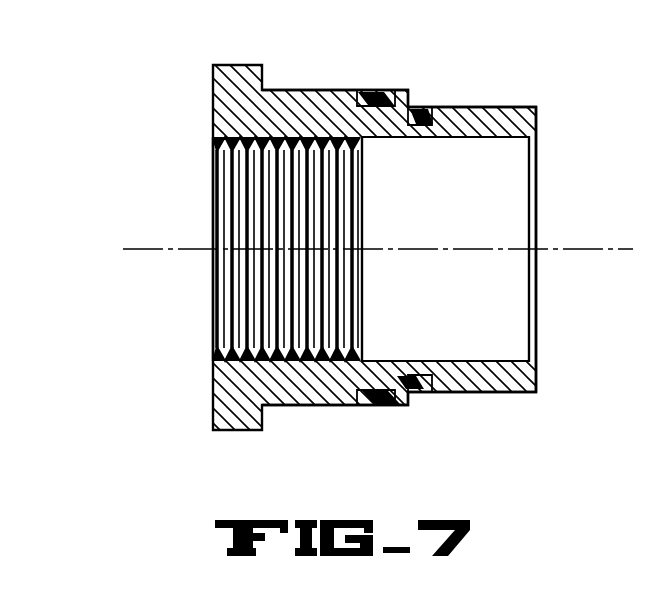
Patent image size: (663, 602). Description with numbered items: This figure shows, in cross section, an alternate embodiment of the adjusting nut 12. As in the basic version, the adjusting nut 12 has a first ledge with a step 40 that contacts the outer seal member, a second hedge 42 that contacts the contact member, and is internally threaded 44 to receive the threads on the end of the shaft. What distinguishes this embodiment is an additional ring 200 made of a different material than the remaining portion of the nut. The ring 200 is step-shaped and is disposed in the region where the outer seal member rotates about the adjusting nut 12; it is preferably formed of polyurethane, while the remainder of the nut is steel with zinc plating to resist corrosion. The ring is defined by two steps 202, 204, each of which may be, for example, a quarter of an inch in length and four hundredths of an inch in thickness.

The adjusting nut 12 is at (136, 68).
The step 40 is at (410, 405).
The second hedge 42 is at (498, 393).
The threads 44 is at (232, 210).
The ring 200 is at (424, 107).
The step 202 is at (305, 90).
The step 204 is at (497, 107).